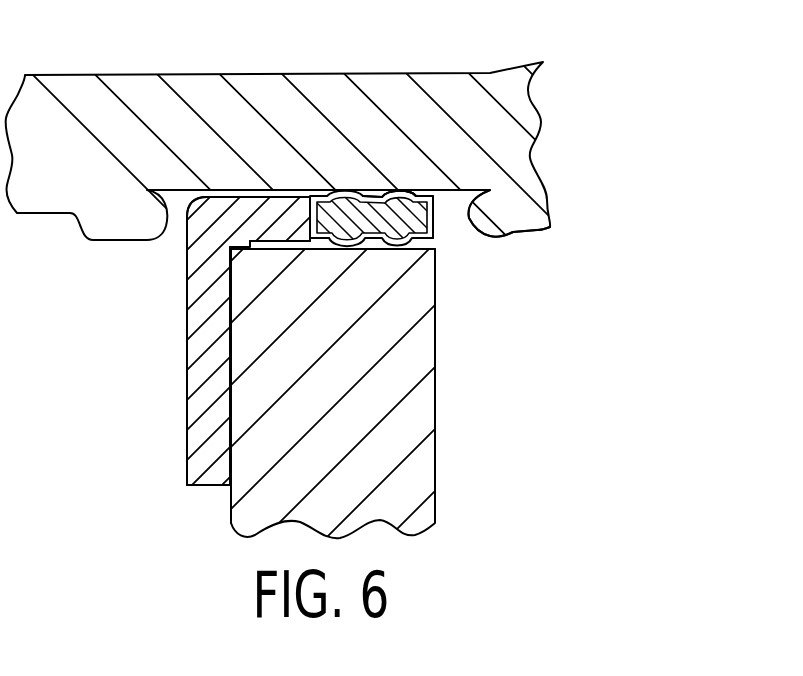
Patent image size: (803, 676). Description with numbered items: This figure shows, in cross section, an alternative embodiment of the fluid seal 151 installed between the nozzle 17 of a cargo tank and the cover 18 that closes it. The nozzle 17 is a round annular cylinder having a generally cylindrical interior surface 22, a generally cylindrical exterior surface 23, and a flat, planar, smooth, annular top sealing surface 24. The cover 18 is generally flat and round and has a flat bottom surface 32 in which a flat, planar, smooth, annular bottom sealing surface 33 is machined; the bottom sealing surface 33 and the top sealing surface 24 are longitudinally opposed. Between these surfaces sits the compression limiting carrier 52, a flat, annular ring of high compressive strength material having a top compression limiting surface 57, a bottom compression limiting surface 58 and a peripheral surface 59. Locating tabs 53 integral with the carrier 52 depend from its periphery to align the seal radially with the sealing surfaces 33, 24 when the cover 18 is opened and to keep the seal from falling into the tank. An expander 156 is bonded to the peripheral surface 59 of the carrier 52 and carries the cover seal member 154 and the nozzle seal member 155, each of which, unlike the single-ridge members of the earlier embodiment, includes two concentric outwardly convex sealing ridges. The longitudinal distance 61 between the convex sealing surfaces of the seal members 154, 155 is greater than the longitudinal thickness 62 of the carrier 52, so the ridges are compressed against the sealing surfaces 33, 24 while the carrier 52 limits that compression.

The nozzle 17 is at (341, 400).
The cover 18 is at (520, 110).
The interior surface 22 is at (255, 507).
The exterior surface 23 is at (437, 441).
The top sealing surface 24 is at (245, 236).
The bottom surface 32 is at (533, 231).
The bottom sealing surface 33 is at (466, 191).
The compression limiting carrier 52 is at (217, 191).
The locating tabs 53 is at (197, 442).
The top compression limiting surface 57 is at (268, 197).
The bottom compression limiting surface 58 is at (280, 250).
The peripheral surface 59 is at (332, 195).
The longitudinal distance 61 is at (398, 283).
The longitudinal thickness 62 is at (298, 283).
The fluid seal 151 is at (183, 364).
The cover seal member 154 is at (436, 194).
The nozzle seal member 155 is at (435, 280).
The expander 156 is at (390, 193).